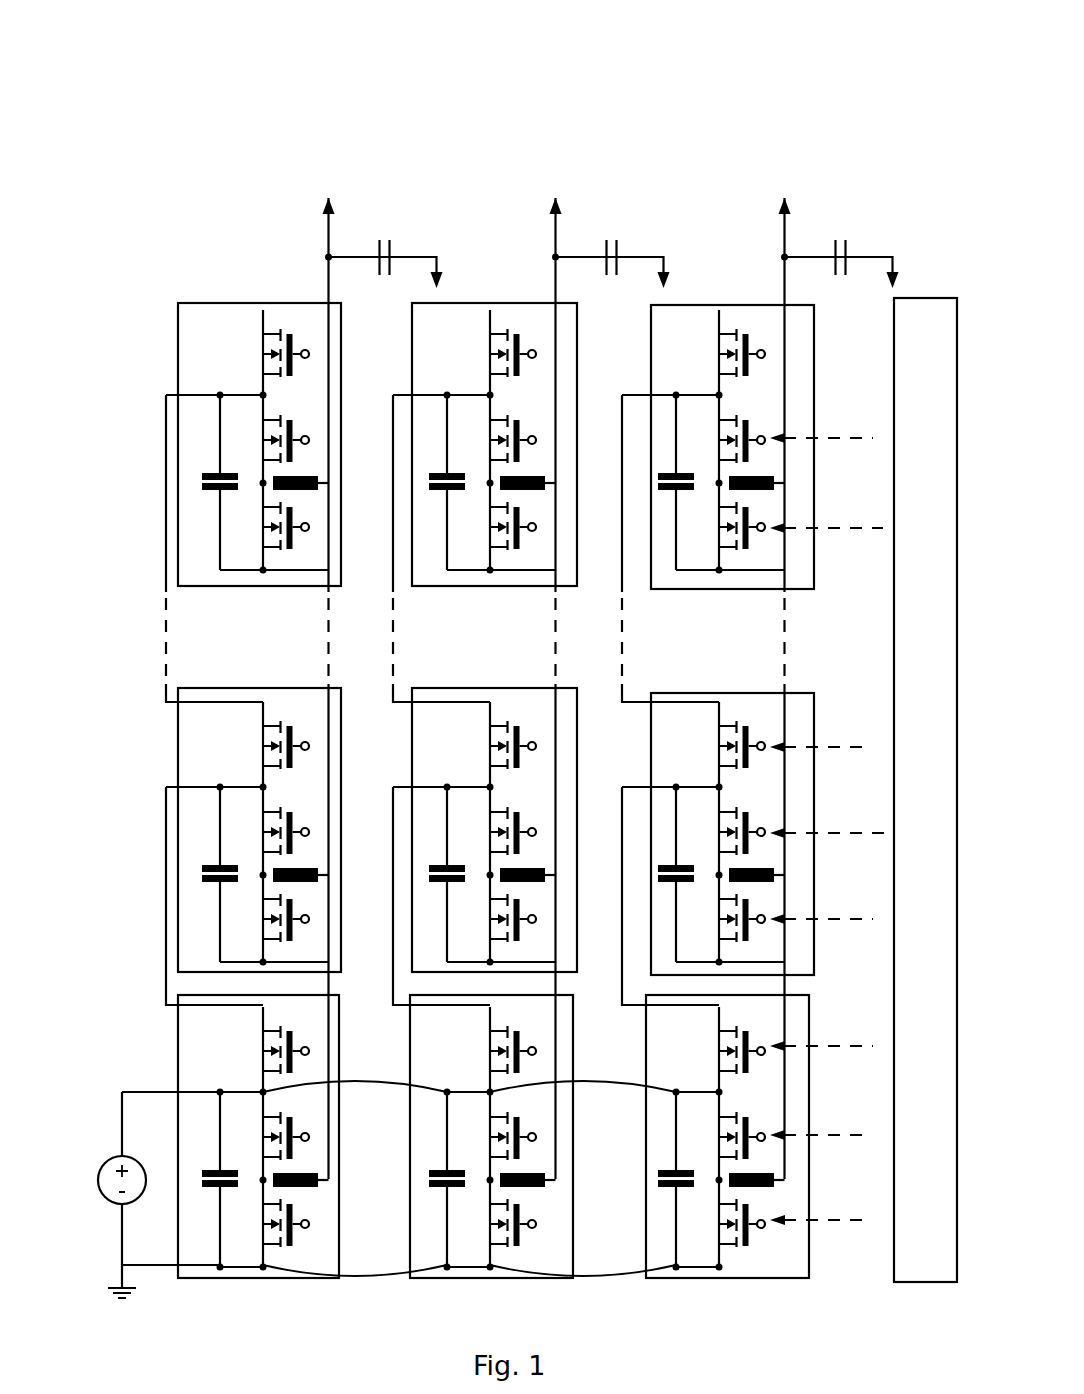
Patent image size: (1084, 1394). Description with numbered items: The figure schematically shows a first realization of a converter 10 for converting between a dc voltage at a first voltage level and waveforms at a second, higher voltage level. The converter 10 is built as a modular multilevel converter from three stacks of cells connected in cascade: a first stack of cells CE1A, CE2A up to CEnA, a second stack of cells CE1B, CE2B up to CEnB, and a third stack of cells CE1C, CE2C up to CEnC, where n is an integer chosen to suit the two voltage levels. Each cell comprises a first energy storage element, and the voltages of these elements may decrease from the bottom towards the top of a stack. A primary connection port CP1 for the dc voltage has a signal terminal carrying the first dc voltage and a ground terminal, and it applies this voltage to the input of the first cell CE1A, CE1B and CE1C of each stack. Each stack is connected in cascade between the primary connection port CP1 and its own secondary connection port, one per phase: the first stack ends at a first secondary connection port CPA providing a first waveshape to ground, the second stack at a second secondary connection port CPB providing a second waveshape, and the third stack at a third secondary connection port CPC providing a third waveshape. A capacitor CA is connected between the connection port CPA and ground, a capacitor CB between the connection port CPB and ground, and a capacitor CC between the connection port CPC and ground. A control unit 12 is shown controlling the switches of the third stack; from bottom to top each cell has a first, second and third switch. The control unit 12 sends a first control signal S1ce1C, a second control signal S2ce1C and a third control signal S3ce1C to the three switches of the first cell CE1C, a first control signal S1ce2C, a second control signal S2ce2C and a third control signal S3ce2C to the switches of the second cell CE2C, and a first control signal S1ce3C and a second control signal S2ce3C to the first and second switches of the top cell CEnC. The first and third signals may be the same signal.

The converter 10 is at (796, 86).
The control unit 12 is at (925, 790).
The nth cell of the first stack CEnA is at (225, 444).
The second cell of the first stack CE2A is at (216, 830).
The first cell of the first stack CE1A is at (210, 1136).
The nth cell of the second stack CEnB is at (459, 444).
The second cell of the second stack CE2B is at (459, 830).
The first cell of the second stack CE1B is at (457, 1136).
The nth cell of the third stack CEnC is at (697, 447).
The second cell of the third stack CE2C is at (698, 834).
The first cell of the third stack CE1C is at (691, 1136).
The first secondary connection port CPA is at (329, 212).
The second secondary connection port CPB is at (557, 212).
The third secondary connection port CPC is at (784, 212).
The capacitor CA is at (386, 279).
The capacitor CB is at (613, 279).
The capacitor CC is at (842, 279).
The primary connection port CP1 is at (132, 1195).
The second control signal S2ce3C is at (829, 424).
The first control signal S1ce3C is at (826, 512).
The third control signal S3ce2C is at (822, 728).
The second control signal S2ce2C is at (828, 816).
The first control signal S1ce2C is at (821, 907).
The third control signal S3ce1C is at (824, 1029).
The second control signal S2ce1C is at (824, 1118).
The first control signal S1ce1C is at (821, 1208).